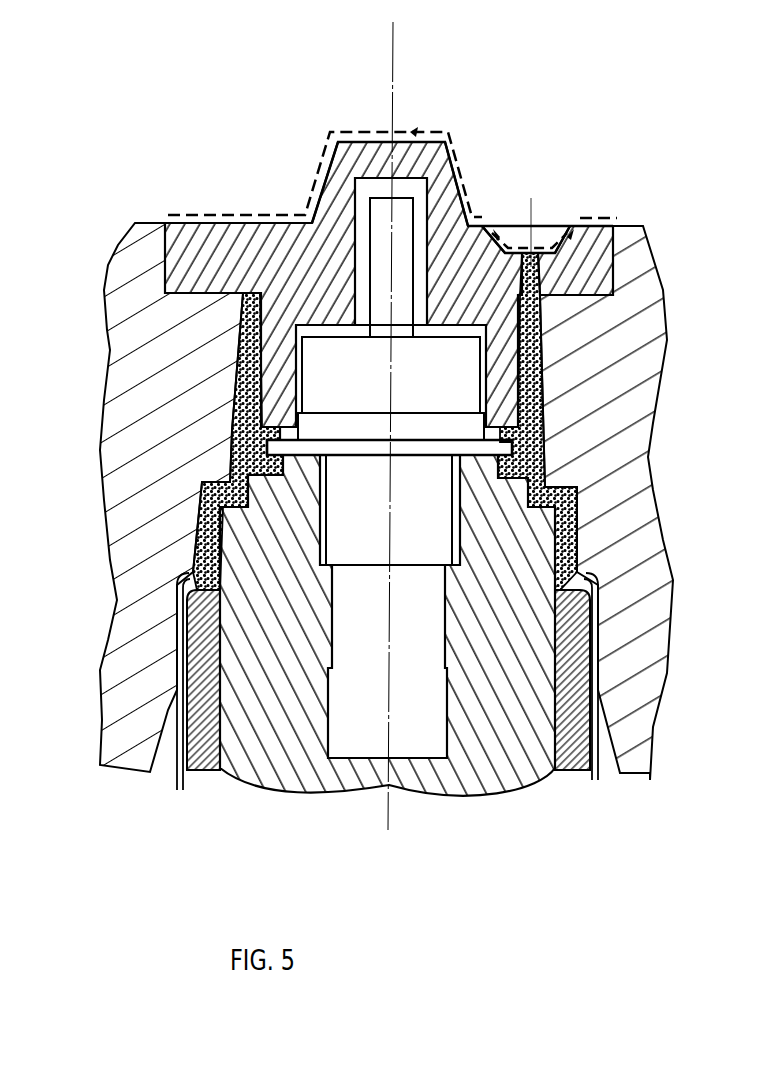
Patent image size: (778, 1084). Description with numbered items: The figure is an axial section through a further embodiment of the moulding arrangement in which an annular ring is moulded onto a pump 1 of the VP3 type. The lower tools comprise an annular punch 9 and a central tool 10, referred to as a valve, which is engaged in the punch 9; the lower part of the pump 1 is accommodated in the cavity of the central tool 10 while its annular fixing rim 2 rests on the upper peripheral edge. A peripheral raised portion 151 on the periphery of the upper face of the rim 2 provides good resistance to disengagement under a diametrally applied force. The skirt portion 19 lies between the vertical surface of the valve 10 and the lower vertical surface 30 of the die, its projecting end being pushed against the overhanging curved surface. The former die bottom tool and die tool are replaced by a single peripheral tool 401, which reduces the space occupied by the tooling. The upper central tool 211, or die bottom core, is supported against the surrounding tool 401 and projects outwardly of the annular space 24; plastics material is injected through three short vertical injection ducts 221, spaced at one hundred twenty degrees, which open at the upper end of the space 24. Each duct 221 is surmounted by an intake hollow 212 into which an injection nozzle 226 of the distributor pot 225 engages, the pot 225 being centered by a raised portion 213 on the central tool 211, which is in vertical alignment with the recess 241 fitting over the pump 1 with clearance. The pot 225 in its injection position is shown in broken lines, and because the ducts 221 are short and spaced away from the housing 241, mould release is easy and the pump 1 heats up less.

The pump 1 is at (370, 612).
The annular fixing rim 2 is at (308, 448).
The annular punch 9 is at (573, 713).
The central tool 10 is at (500, 723).
The skirt portion 19 is at (182, 745).
The annular space 24 is at (247, 348).
The lower vertical surface 30 is at (175, 630).
The peripheral raised portion 151 is at (267, 433).
The upper central tool 211 is at (227, 250).
The intake hollow 212 is at (567, 236).
The raised portion 213 is at (358, 140).
The injection duct 221 is at (530, 267).
The distributor pot 225 is at (411, 132).
The injection nozzle 226 is at (500, 236).
The recess 241 is at (355, 266).
The peripheral tool 401 is at (615, 432).